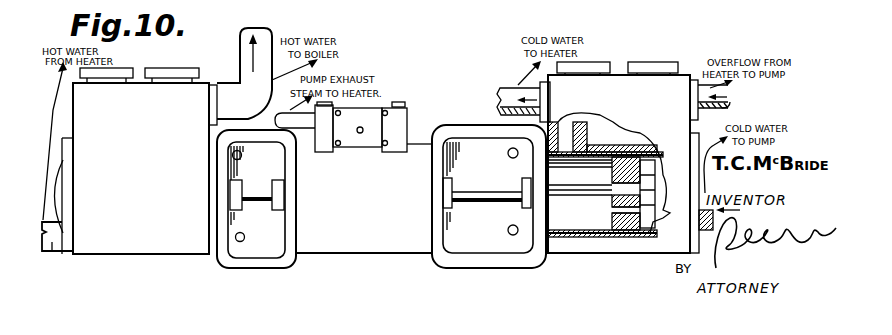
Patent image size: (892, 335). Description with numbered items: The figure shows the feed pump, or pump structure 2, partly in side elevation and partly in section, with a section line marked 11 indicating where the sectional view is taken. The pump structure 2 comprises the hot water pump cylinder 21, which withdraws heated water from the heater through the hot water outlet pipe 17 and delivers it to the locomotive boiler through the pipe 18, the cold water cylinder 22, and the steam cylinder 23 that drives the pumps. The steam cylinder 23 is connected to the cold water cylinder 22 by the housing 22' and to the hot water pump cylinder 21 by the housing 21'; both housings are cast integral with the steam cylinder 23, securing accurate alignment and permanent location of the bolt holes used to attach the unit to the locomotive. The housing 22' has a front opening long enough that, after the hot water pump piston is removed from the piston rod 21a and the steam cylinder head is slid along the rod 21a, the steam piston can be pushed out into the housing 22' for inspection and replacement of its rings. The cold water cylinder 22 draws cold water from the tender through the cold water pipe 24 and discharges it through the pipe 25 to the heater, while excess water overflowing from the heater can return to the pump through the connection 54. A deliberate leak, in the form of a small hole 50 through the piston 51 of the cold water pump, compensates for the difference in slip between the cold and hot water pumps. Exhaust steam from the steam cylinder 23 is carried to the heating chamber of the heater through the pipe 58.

The pump structure 2 is at (344, 241).
The section line 11- 11 is at (514, 95).
The hot water outlet pipe 17 is at (52, 251).
The pipe 18 is at (266, 33).
The hot water pump cylinder 21 is at (136, 176).
The housing 21' is at (238, 213).
The piston rod 21a is at (256, 203).
The cold water cylinder 22 is at (623, 174).
The housing 22' is at (489, 198).
The steam cylinder 23 is at (364, 262).
The cold water pipe 24 is at (700, 224).
The pipe 25 is at (503, 88).
The small hole 50 is at (607, 238).
The piston 51 is at (628, 231).
The connection 54 is at (726, 91).
The pipe 58 is at (300, 122).